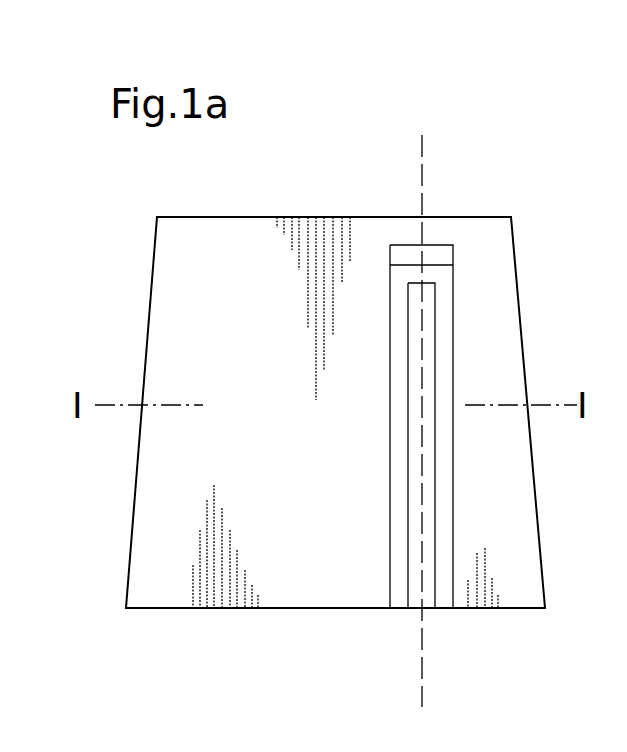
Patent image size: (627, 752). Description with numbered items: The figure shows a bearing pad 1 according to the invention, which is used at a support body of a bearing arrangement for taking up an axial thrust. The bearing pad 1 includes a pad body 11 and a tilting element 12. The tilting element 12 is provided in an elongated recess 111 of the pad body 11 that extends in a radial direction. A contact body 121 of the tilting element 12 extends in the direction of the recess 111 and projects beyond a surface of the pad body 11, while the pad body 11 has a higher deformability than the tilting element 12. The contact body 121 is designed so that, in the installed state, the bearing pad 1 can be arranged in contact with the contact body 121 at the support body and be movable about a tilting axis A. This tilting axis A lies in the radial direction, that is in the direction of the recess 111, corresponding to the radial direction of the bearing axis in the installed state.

The bearing pad 1 is at (484, 94).
The tilting axis A is at (420, 150).
The pad body 11 is at (177, 522).
The tilting element 12 is at (392, 568).
The recess 111 is at (443, 250).
The contact body 121 is at (425, 597).